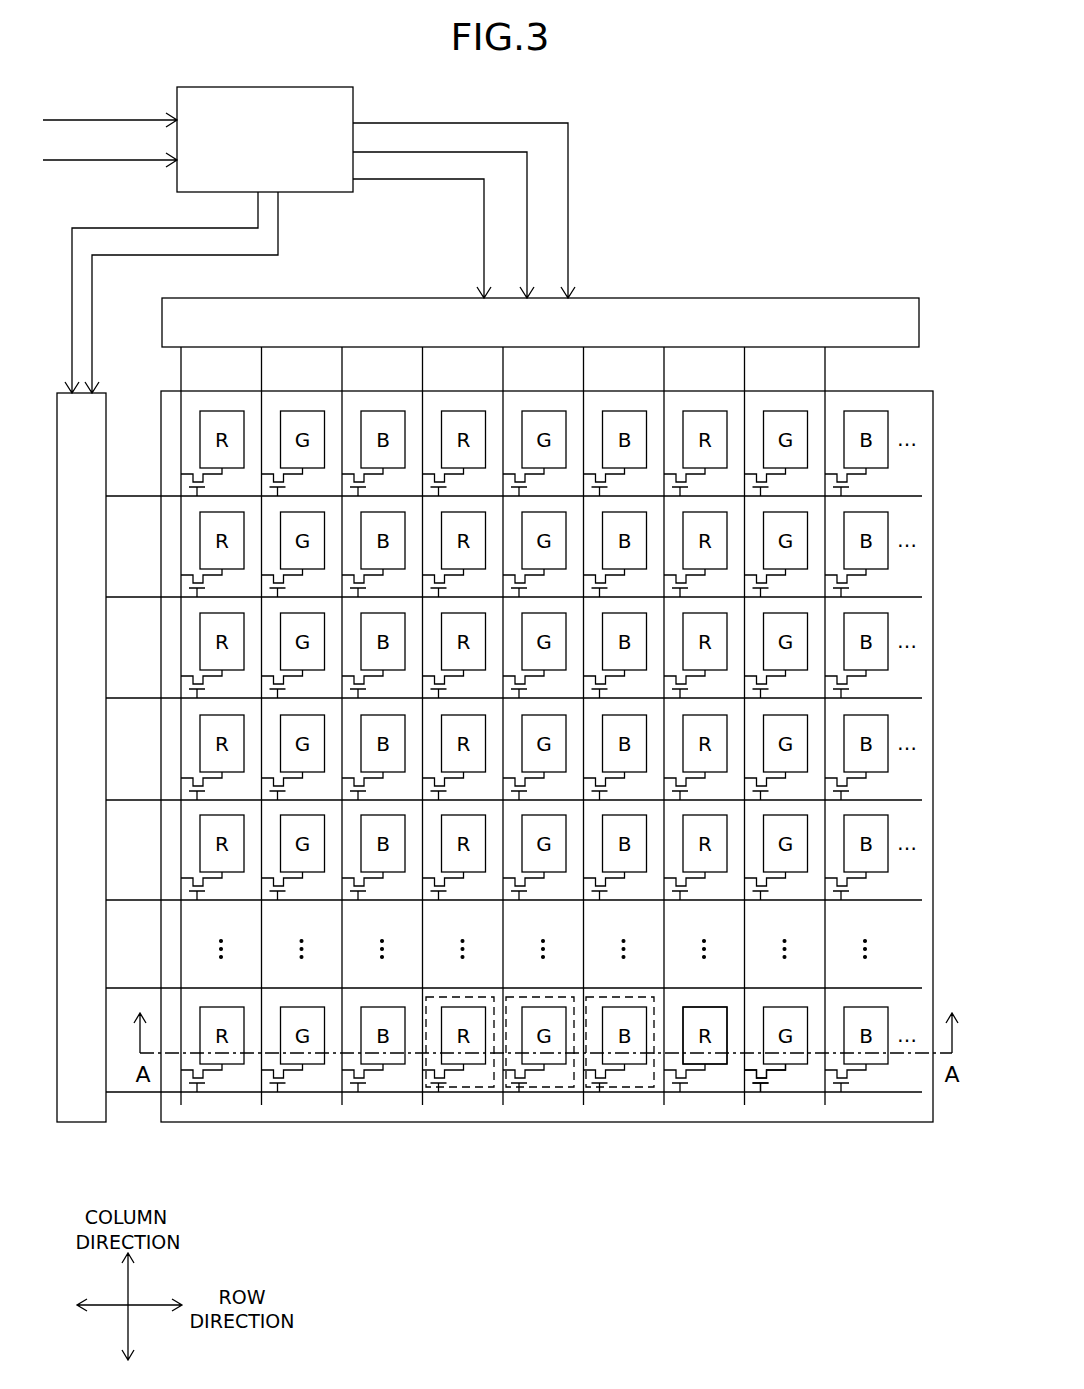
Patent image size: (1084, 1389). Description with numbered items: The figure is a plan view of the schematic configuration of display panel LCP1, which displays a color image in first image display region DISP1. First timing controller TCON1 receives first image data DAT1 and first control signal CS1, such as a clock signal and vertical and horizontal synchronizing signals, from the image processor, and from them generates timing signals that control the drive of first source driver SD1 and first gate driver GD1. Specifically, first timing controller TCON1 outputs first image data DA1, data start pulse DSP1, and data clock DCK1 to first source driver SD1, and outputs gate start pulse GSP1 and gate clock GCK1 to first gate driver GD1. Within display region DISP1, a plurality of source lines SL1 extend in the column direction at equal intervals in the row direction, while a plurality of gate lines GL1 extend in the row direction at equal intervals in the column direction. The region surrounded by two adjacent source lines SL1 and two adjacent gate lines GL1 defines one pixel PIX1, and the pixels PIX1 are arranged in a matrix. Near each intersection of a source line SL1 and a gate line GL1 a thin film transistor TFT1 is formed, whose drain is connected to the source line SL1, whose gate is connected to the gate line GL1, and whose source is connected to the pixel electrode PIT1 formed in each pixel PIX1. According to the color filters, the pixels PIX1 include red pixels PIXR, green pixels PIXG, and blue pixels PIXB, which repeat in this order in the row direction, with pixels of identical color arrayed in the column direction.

The first timing controller TCON1 is at (300, 87).
The first control signal CS1 is at (110, 109).
The first image data DAT1 is at (110, 150).
The data start pulse DSP1 is at (464, 197).
The data clock DCK1 is at (443, 211).
The first image data DA1 is at (422, 225).
The gate start pulse GSP1 is at (161, 292).
The gate clock GCK1 is at (213, 292).
The display panel LCP1 is at (765, 237).
The first source driver SD1 is at (822, 298).
The source line SL1 is at (826, 368).
The first gate driver GD1 is at (106, 393).
The gate line GL1 is at (127, 1094).
The first image display region DISP1 is at (325, 1122).
The pixel PIX1 is at (549, 813).
The red pixel PIXR is at (460, 1095).
The green pixel PIXG is at (540, 1095).
The blue pixel PIXB is at (626, 1095).
The pixel electrode PIT1 is at (713, 1065).
The thin film transistor TFT1 is at (787, 1090).